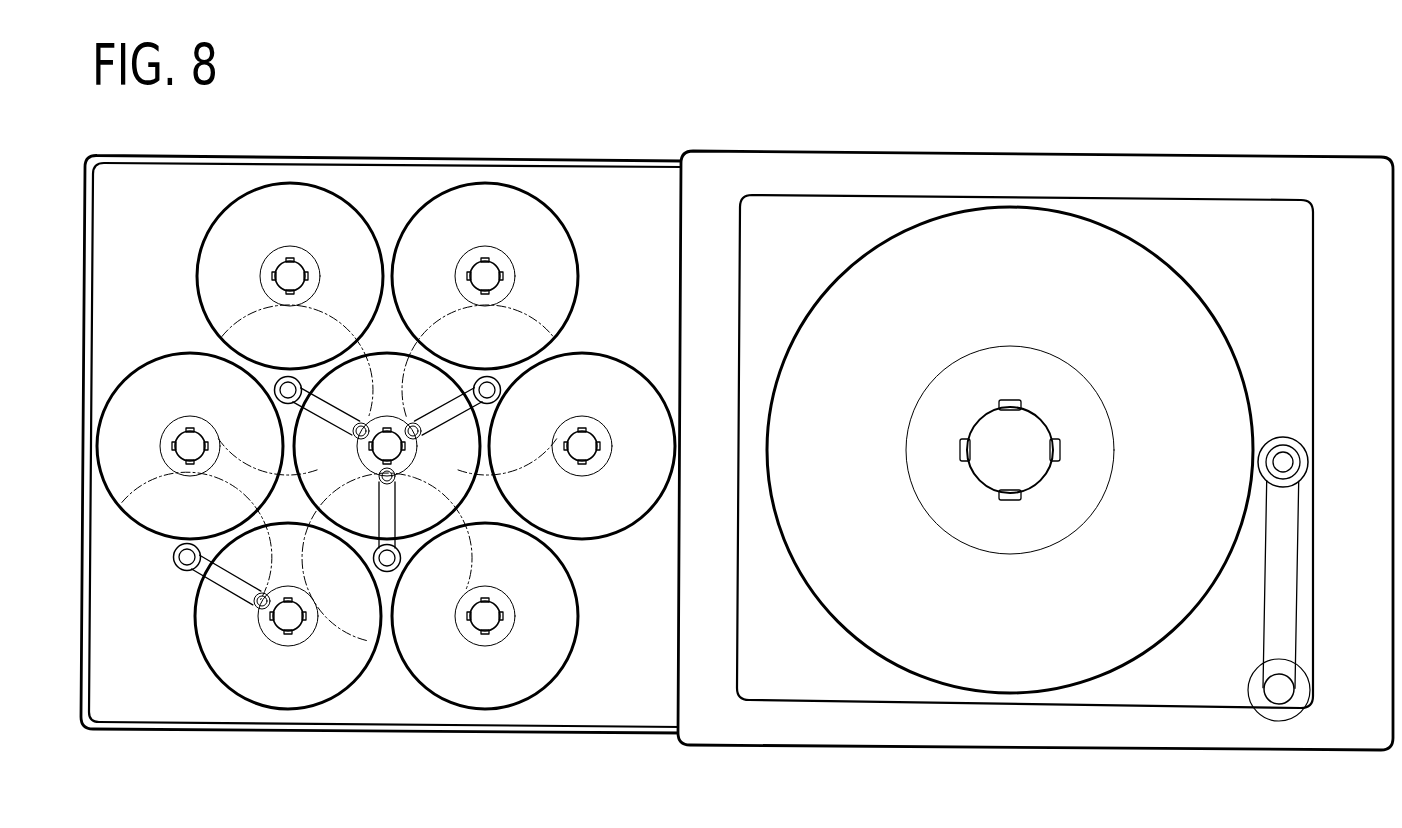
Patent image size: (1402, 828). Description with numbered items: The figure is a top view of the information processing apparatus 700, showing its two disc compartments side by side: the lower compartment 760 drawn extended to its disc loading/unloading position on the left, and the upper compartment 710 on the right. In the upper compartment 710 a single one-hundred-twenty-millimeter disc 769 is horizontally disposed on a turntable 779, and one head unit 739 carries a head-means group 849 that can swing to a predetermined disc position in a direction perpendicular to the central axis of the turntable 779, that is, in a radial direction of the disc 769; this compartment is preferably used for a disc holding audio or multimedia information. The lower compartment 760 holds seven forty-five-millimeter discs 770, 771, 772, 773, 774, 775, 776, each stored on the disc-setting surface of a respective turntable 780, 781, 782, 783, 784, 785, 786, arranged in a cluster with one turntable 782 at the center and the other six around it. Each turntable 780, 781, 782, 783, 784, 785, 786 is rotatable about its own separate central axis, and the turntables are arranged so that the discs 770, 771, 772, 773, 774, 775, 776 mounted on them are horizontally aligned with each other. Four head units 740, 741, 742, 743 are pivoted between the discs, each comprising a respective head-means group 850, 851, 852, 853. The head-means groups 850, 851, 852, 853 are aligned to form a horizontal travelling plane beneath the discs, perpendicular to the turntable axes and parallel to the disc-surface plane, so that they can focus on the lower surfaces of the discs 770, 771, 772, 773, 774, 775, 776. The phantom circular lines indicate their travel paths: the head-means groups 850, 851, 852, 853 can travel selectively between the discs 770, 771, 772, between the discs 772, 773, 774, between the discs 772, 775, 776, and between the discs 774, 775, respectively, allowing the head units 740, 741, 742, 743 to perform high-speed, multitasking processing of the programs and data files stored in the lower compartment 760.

The information processing apparatus 700 is at (680, 120).
The lower compartment 760 is at (380, 157).
The upper compartment 710 is at (957, 152).
The disc 769 is at (1187, 282).
The turntable 779 is at (1040, 420).
The head-means group 849 is at (1280, 452).
The head unit 739 is at (1257, 598).
The disc 770 is at (569, 237).
The disc 771 is at (635, 370).
The disc 772 is at (394, 354).
The disc 773 is at (570, 651).
The disc 774 is at (203, 651).
The disc 775 is at (137, 370).
The disc 776 is at (206, 237).
The turntable 780 is at (498, 284).
The turntable 781 is at (595, 453).
The turntable 782 is at (399, 457).
The turntable 783 is at (498, 623).
The turntable 784 is at (301, 623).
The turntable 785 is at (203, 453).
The turntable 786 is at (303, 284).
The head unit 740 is at (451, 416).
The head unit 741 is at (379, 505).
The head unit 742 is at (325, 404).
The head unit 743 is at (212, 581).
The head-means group 850 is at (414, 424).
The head-means group 851 is at (393, 481).
The head-means group 852 is at (353, 432).
The head-means group 853 is at (254, 598).